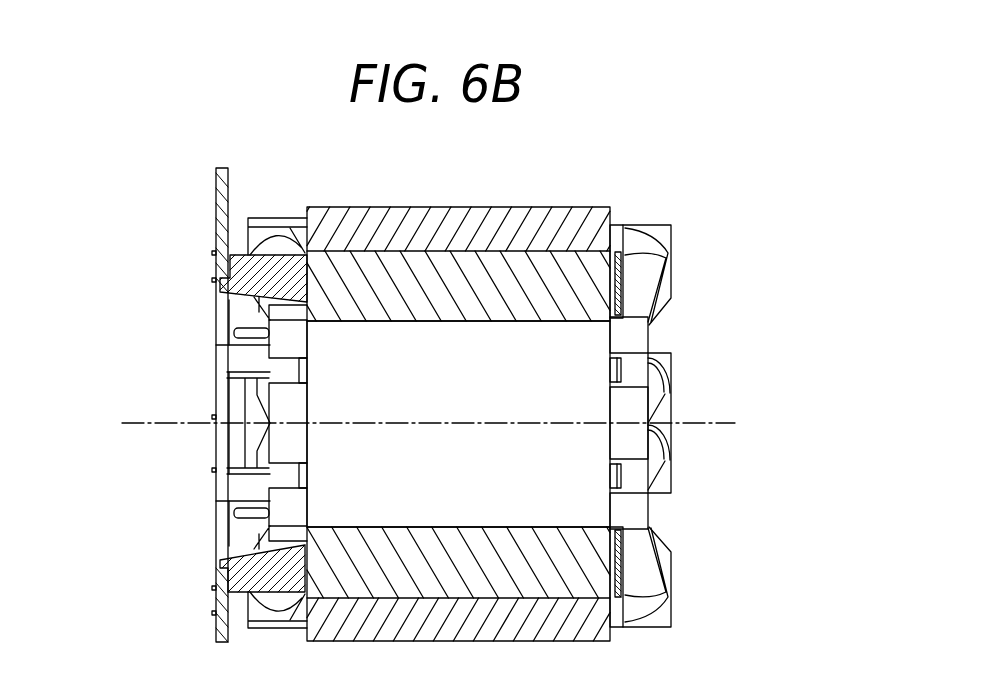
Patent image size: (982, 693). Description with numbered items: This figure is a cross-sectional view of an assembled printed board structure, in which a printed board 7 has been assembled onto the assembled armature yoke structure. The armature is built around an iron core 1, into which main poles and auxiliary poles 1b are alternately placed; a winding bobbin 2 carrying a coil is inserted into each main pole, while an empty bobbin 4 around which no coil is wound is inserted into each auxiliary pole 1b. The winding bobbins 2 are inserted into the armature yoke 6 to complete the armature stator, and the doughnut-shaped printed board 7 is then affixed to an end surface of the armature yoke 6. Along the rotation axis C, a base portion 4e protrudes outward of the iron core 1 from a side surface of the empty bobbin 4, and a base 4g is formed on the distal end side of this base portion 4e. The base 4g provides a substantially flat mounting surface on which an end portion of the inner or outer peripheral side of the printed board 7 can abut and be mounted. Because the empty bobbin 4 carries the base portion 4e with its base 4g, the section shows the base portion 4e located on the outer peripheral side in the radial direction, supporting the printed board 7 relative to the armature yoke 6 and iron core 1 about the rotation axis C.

The iron core 1 is at (549, 470).
The auxiliary pole 1b is at (549, 289).
The winding bobbin 2 is at (672, 373).
The empty bobbin 4 is at (252, 250).
The base portion 4e is at (273, 262).
The base 4g is at (217, 270).
The armature yoke 6 is at (476, 206).
The printed board 7 is at (217, 208).
The rotation axis C is at (126, 421).